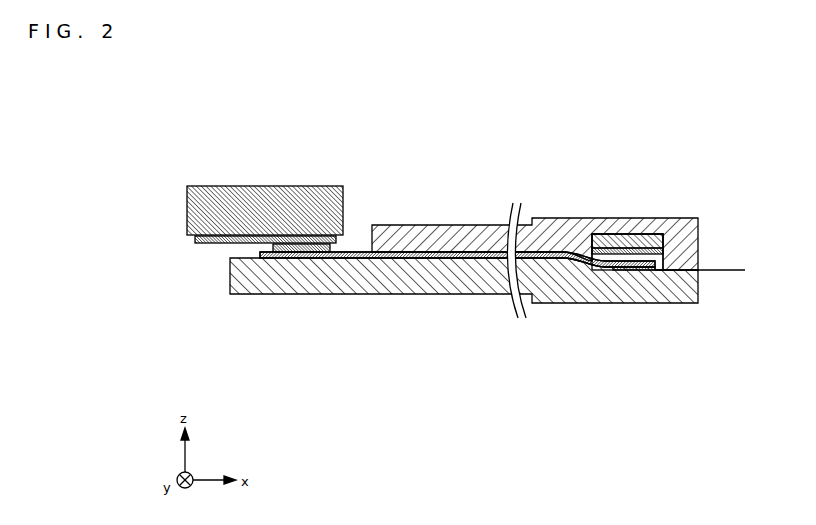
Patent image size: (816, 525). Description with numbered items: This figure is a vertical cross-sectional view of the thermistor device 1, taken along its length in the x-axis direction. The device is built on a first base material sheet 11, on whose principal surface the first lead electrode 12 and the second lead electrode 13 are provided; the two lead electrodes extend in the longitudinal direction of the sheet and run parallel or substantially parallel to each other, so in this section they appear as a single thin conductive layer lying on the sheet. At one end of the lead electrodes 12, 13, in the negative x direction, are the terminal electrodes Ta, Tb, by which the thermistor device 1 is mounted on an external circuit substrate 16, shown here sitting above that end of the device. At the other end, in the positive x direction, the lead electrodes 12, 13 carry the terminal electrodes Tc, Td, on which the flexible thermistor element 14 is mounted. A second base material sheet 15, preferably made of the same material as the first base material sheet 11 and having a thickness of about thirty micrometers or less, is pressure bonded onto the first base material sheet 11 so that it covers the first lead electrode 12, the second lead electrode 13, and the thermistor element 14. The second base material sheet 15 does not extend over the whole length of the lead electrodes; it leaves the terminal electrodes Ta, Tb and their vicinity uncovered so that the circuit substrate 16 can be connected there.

The thermistor device 1 is at (206, 87).
The first base material sheet 11 is at (470, 293).
The first lead electrode 12 is at (560, 262).
The second lead electrode 13 is at (457, 259).
The flexible thermistor element 14 is at (685, 221).
The second base material sheet 15 is at (563, 218).
The external circuit substrate 16 is at (281, 186).
The terminal electrode Ta is at (297, 256).
The terminal electrode Tb is at (301, 248).
The terminal electrode Tc is at (632, 270).
The terminal electrode Td is at (634, 268).